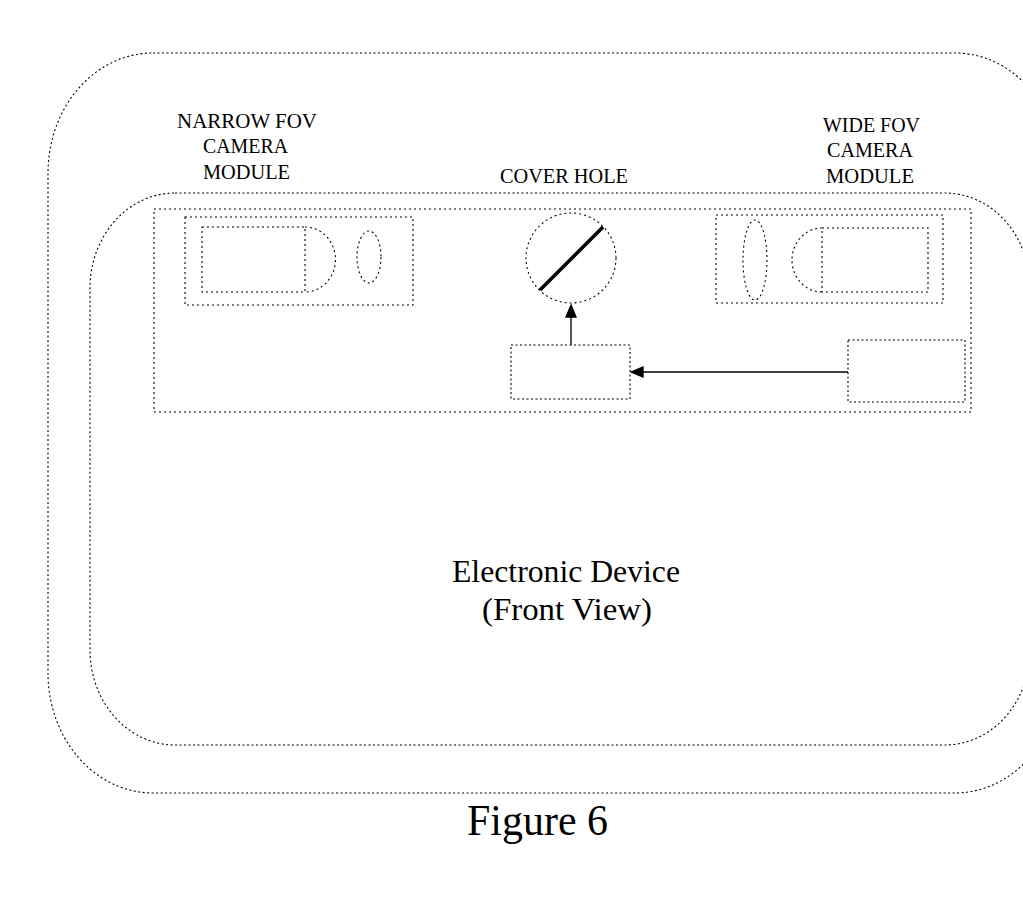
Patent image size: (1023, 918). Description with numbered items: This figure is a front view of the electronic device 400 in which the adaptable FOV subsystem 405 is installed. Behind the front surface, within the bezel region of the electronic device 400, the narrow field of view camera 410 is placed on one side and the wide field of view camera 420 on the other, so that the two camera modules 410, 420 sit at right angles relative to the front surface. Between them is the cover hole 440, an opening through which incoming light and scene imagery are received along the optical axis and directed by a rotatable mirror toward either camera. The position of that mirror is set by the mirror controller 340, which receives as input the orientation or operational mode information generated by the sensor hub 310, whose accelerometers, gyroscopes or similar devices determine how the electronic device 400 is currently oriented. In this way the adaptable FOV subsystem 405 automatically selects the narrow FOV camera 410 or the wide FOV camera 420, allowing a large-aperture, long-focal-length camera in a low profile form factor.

The electronic device 400 is at (535, 406).
The adaptable FOV subsystem 405 is at (562, 335).
The narrow field of view camera 410 is at (413, 262).
The wide field of view camera 420 is at (716, 265).
The cover hole 440 is at (535, 258).
The mirror controller 340 is at (537, 345).
The sensor hub 310 is at (906, 340).